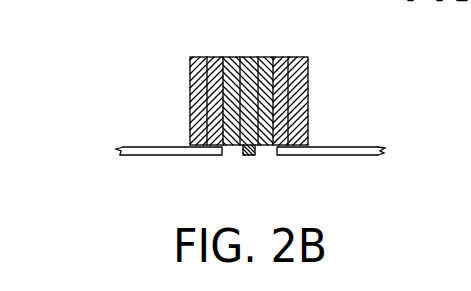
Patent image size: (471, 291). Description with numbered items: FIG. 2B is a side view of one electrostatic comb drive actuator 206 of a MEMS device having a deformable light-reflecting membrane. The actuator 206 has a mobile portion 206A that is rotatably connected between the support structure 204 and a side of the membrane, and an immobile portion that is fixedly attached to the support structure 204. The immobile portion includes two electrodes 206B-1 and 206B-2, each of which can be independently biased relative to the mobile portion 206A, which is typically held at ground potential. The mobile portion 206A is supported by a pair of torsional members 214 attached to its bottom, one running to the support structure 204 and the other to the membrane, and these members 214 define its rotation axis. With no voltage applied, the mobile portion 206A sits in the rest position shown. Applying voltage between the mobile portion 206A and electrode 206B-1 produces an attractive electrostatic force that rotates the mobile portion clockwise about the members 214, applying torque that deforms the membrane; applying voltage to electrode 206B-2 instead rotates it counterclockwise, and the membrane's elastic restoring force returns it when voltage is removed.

The electrostatic comb drive actuator 206 is at (79, 203).
The mobile portion 206A is at (246, 56).
The electrode 206B-1 is at (308, 59).
The electrode 206B-2 is at (188, 57).
The support structure 204 is at (381, 145).
The torsional member 214 is at (249, 155).